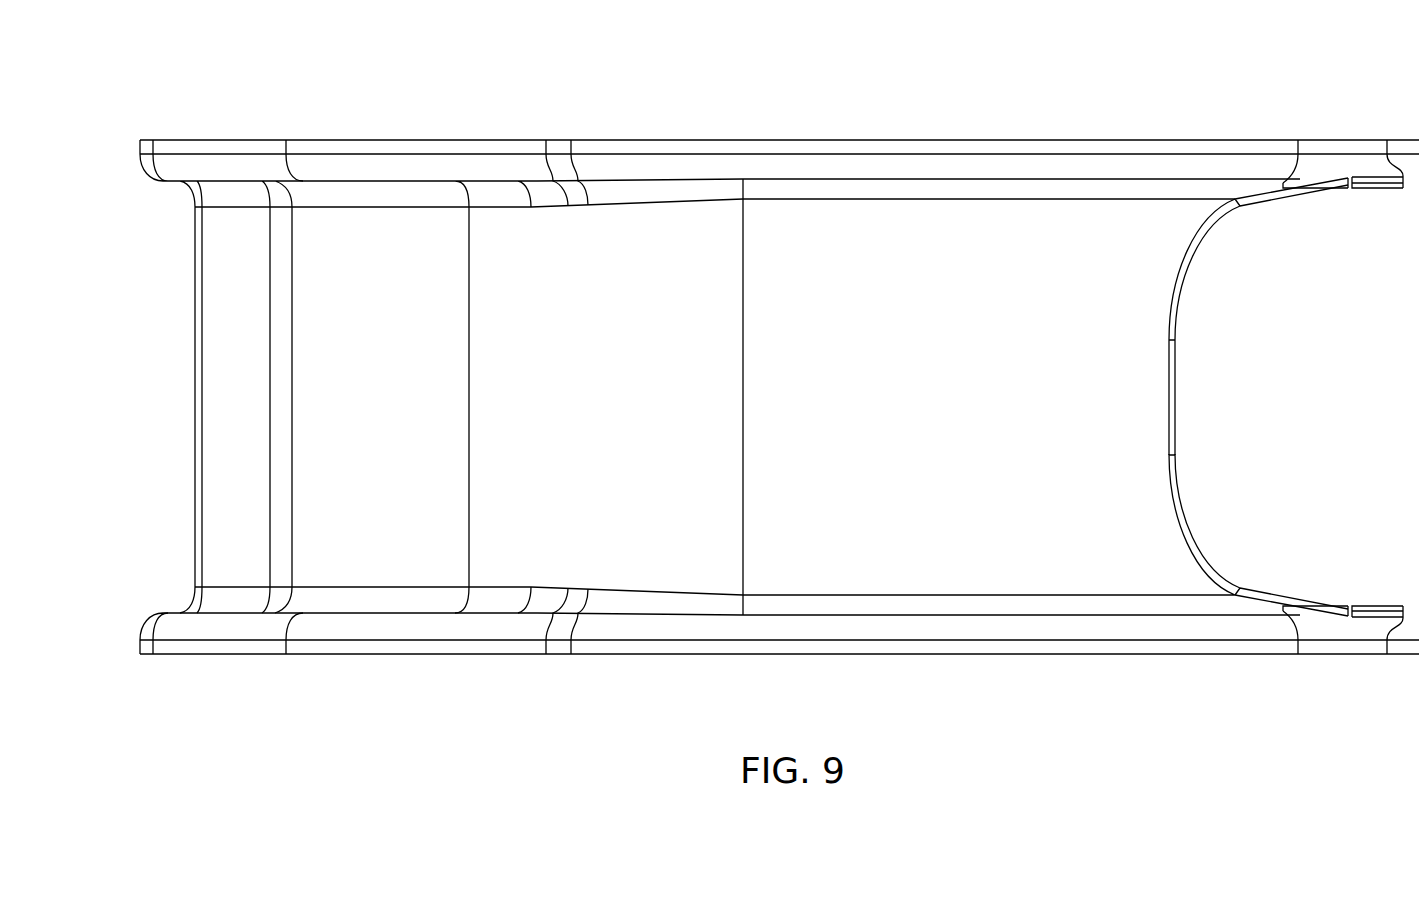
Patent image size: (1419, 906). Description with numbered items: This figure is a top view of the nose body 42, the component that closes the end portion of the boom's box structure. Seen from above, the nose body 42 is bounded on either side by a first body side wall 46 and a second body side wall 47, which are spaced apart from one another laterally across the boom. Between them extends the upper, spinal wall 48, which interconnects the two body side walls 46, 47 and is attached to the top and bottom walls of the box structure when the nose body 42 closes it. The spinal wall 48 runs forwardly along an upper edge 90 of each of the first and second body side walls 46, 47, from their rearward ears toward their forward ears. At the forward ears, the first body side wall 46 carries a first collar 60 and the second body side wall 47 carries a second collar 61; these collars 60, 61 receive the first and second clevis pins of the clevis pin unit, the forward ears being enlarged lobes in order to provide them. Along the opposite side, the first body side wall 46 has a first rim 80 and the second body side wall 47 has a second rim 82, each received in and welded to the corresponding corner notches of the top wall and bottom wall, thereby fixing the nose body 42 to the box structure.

The nose body 42 is at (225, 84).
The first body side wall 46 is at (678, 654).
The second body side wall 47 is at (938, 139).
The spinal wall 48 is at (878, 422).
The first collar 60 is at (1392, 605).
The second collar 61 is at (1392, 190).
The first rim 80 is at (862, 654).
The second rim 82 is at (1037, 147).
The upper edge 90 is at (762, 147).